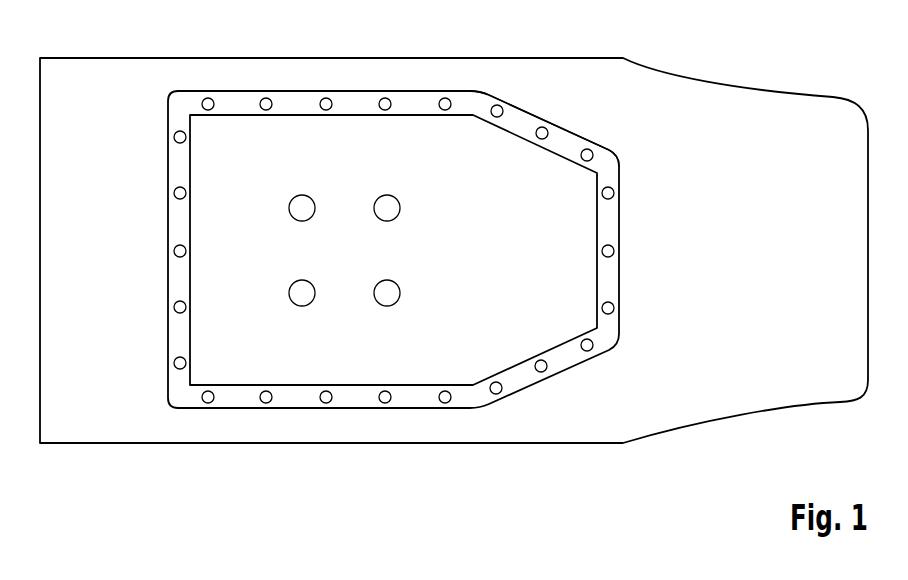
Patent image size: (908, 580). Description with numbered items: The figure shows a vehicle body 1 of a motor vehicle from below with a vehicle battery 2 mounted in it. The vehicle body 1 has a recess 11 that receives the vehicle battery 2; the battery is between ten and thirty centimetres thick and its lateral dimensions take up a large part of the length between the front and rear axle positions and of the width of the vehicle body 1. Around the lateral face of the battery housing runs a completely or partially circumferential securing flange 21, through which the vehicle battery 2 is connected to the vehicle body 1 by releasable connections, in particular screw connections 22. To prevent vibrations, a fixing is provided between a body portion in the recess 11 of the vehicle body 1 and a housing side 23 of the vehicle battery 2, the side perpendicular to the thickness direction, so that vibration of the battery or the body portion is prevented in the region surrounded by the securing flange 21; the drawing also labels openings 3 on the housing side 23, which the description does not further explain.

The vehicle body 1 is at (683, 77).
The recess 11 is at (574, 128).
The vehicle battery 2 is at (447, 140).
The securing flange 21 is at (521, 122).
The screw connections 22 is at (266, 98).
The housing side 23 is at (403, 133).
The through holes 3 is at (308, 197).